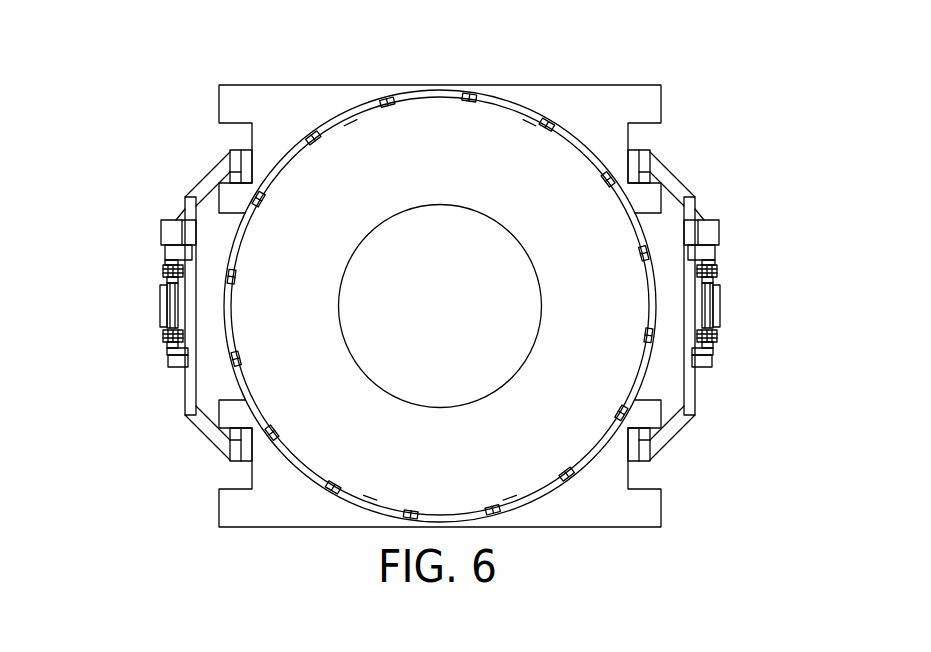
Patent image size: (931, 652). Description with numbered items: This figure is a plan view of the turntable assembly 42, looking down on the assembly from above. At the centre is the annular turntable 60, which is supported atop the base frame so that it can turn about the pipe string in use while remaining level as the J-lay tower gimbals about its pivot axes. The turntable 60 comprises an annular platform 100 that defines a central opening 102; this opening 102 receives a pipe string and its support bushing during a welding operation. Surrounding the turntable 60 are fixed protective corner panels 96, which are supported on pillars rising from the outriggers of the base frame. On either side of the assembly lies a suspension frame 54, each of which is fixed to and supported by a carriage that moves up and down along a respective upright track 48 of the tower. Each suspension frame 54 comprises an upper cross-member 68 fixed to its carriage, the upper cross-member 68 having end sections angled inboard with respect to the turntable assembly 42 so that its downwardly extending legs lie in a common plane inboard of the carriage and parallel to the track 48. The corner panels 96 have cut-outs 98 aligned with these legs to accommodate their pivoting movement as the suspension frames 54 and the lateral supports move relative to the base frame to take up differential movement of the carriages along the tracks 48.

The turntable assembly 42 is at (139, 90).
The track 48 is at (719, 270).
The suspension frame 54 is at (677, 171).
The annular turntable 60 is at (624, 357).
The upper cross-member 68 is at (188, 391).
The protective corner panel 96 is at (626, 101).
The cut-out 98 is at (237, 121).
The annular platform 100 is at (410, 120).
The central opening 102 is at (463, 204).